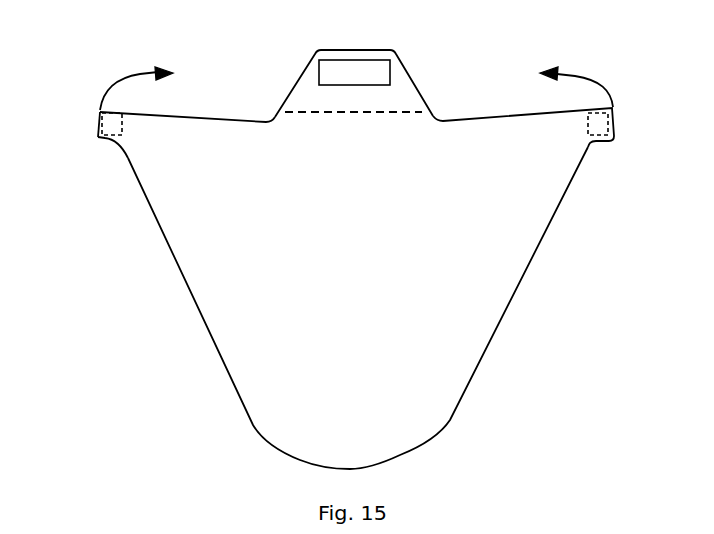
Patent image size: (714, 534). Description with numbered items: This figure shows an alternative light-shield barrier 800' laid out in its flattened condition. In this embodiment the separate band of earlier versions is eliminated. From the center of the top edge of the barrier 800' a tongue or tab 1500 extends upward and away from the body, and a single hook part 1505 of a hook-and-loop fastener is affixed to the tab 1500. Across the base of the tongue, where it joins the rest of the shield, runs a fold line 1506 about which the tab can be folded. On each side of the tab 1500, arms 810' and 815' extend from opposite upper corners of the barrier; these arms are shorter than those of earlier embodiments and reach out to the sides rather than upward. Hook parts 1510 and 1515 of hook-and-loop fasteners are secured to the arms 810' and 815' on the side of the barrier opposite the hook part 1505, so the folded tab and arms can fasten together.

The barrier 800' is at (356, 288).
The tongue or tab 1500 is at (398, 65).
The hook part 1505 is at (358, 60).
The fold line 1506 is at (312, 112).
The arm 810' is at (104, 101).
The arm 815' is at (611, 101).
The hook part 1510 is at (105, 140).
The hook part 1515 is at (598, 136).